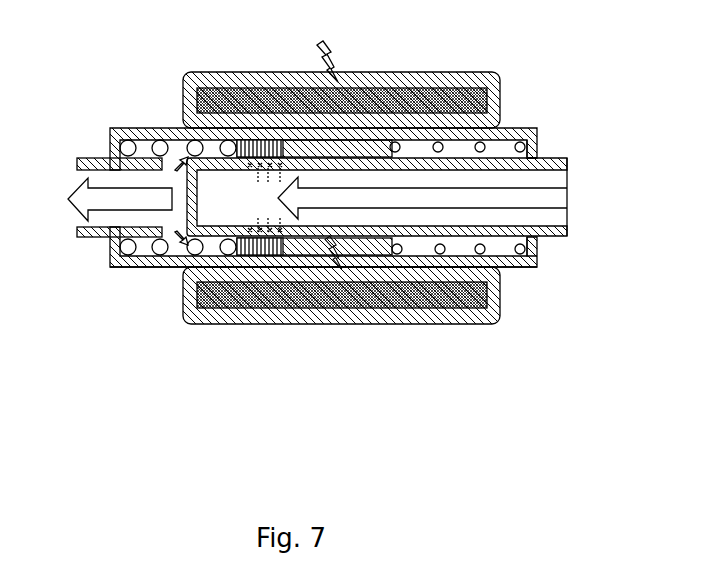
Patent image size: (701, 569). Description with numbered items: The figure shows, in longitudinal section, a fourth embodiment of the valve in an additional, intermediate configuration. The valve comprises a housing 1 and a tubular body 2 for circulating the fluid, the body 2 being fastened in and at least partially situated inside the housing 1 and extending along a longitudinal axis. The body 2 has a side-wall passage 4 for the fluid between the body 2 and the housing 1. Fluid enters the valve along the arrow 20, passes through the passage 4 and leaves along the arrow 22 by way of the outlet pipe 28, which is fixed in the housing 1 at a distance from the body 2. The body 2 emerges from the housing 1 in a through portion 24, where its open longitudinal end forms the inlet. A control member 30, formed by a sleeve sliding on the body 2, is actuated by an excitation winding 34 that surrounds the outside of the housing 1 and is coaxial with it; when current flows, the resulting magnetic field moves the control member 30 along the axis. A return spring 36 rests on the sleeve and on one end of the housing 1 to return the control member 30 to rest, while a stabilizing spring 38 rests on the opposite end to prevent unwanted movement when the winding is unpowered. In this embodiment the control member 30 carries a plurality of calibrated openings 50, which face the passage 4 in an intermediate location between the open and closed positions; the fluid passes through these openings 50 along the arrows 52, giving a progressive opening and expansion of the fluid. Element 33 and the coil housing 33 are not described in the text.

The housing 1 is at (156, 273).
The body 2 is at (458, 167).
The passage 4 is at (247, 174).
The arrow 20 is at (571, 202).
The arrow 22 is at (141, 182).
The through portion 24 is at (544, 147).
The pipe 28 is at (96, 240).
The control member 30 is at (356, 150).
The coil housing 33 is at (442, 74).
The excitation winding 34 is at (400, 88).
The return spring 36 is at (163, 138).
The stabilizing spring 38 is at (503, 133).
The openings 50 is at (263, 73).
The arrows 52 is at (254, 164).